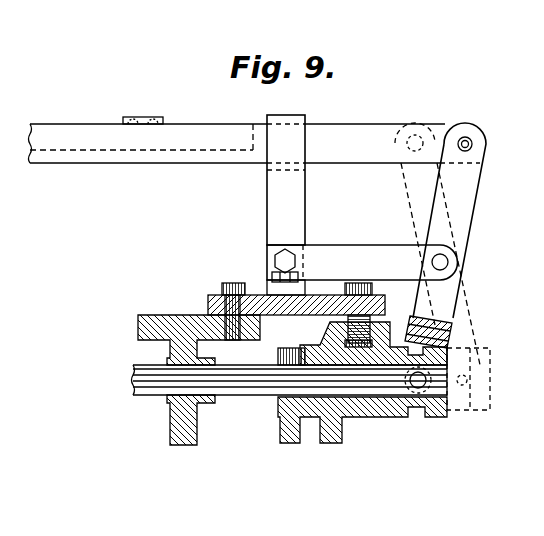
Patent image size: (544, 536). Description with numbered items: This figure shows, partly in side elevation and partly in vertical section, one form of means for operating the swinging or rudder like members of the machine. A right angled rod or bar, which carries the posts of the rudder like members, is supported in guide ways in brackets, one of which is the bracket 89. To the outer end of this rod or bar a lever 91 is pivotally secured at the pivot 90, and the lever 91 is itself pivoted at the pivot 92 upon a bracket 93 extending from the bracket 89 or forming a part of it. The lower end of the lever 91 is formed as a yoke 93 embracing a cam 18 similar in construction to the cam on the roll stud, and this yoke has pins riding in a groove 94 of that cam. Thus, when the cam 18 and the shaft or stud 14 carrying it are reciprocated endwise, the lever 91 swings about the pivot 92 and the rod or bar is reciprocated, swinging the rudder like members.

The stud 14 is at (256, 383).
The cam 18 is at (327, 333).
The bracket 89 is at (278, 187).
The pivot 90 is at (469, 140).
The lever 91 is at (470, 198).
The pivot 92 is at (448, 262).
The bracket / yoke 93 is at (352, 252).
The groove 94 is at (412, 412).